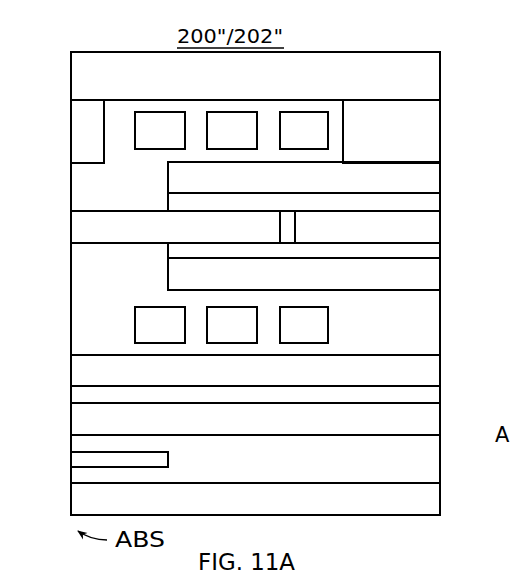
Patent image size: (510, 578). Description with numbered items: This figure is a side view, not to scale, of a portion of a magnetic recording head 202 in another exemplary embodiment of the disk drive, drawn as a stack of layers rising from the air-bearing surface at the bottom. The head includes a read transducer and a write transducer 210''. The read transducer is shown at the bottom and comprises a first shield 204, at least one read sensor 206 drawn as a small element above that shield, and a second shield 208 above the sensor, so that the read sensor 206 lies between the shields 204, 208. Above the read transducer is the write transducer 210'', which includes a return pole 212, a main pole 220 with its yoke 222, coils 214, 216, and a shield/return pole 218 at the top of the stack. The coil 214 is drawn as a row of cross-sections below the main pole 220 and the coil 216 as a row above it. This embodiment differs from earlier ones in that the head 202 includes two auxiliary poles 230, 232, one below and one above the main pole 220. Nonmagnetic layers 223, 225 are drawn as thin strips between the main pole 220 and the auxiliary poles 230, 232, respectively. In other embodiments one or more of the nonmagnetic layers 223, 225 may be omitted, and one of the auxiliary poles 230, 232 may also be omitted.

The shield/return pole 218 is at (441, 83).
The write transducer 210'' is at (220, 129).
The coil 216 is at (158, 104).
The auxiliary pole 232 is at (423, 163).
The nonmagnetic layer 225 is at (443, 200).
The main pole 220 is at (70, 230).
The yoke 222 is at (441, 237).
The nonmagnetic layer 223 is at (441, 248).
The auxiliary pole 230 is at (441, 288).
The coil 214 is at (117, 338).
The return pole 212 is at (70, 372).
The shield 208 is at (441, 418).
The magnetic recording head 202 is at (52, 428).
The read sensor 206 is at (70, 458).
The shield 204 is at (441, 502).